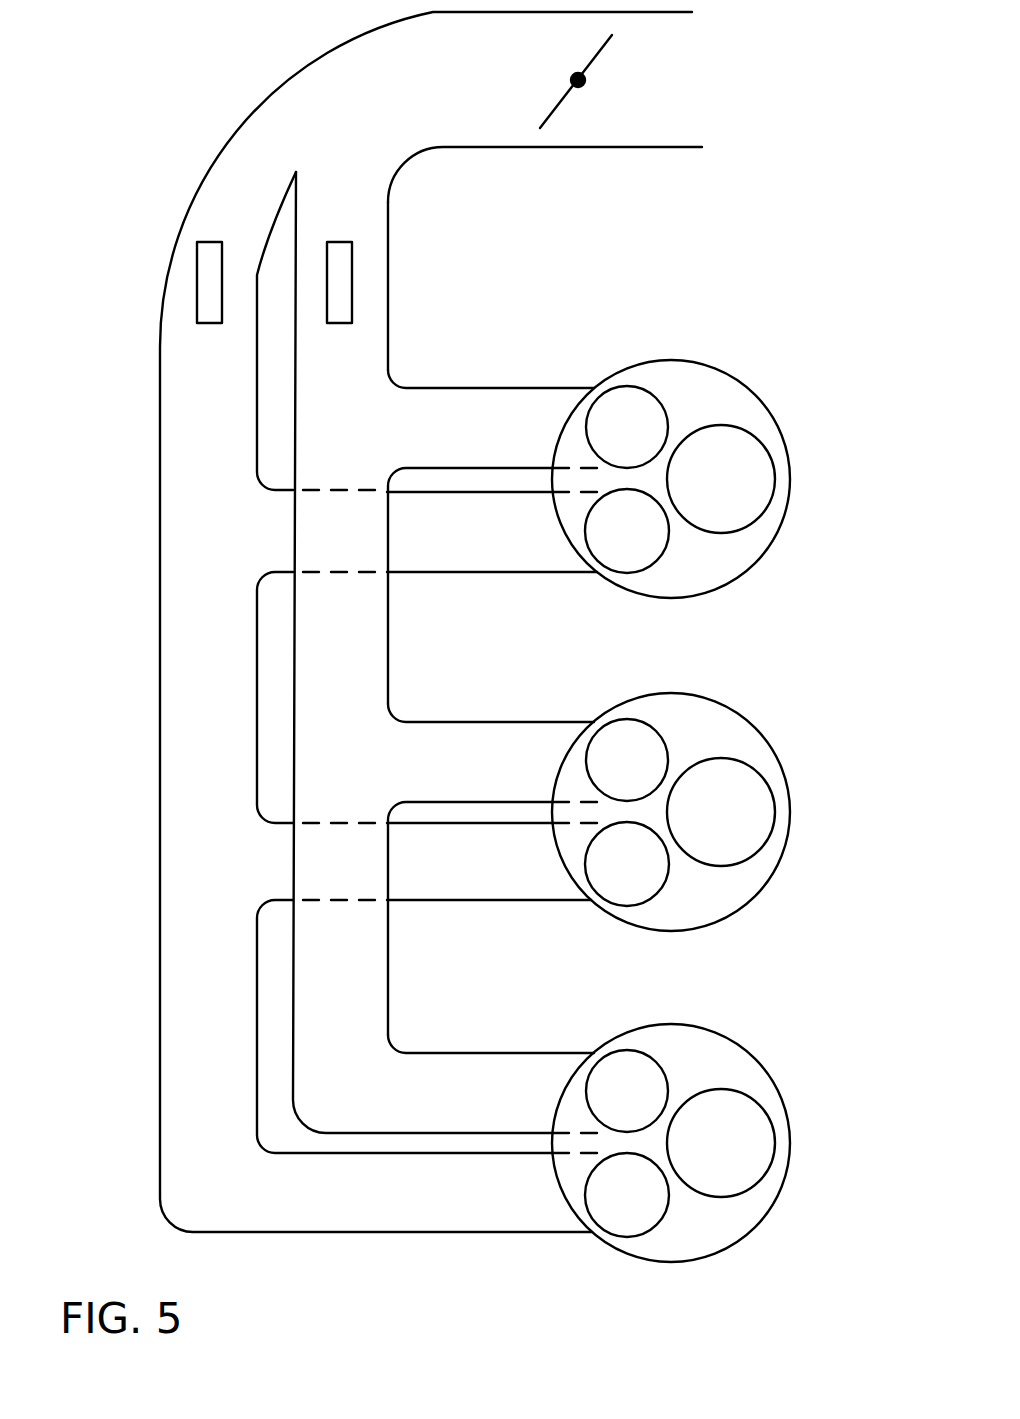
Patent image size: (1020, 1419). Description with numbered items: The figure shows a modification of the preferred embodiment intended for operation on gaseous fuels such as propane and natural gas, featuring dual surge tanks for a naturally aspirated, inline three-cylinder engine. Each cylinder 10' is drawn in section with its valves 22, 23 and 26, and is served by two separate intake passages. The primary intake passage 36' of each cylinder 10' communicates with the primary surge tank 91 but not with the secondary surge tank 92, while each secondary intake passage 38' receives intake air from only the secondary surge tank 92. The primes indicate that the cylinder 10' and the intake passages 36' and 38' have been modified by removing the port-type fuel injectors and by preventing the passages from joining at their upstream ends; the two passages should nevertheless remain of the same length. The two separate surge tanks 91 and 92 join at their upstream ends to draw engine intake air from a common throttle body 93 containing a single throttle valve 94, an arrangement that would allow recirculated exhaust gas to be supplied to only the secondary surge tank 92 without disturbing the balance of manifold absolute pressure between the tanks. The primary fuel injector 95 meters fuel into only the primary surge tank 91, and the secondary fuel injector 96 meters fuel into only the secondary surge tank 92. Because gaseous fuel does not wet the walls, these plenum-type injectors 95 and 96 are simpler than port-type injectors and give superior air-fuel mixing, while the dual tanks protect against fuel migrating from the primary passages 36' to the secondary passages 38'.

The cylinder 10' is at (677, 773).
The valve 22 is at (646, 438).
The valve 23 is at (648, 543).
The valve 26 is at (742, 490).
The primary intake passage 36' is at (491, 694).
The secondary intake passage 38' is at (452, 876).
The primary surge tank 91 is at (388, 285).
The secondary surge tank 92 is at (160, 718).
The throttle body 93 is at (590, 148).
The throttle valve 94 is at (562, 100).
The primary fuel injector 95 is at (337, 242).
The secondary fuel injector 96 is at (207, 242).